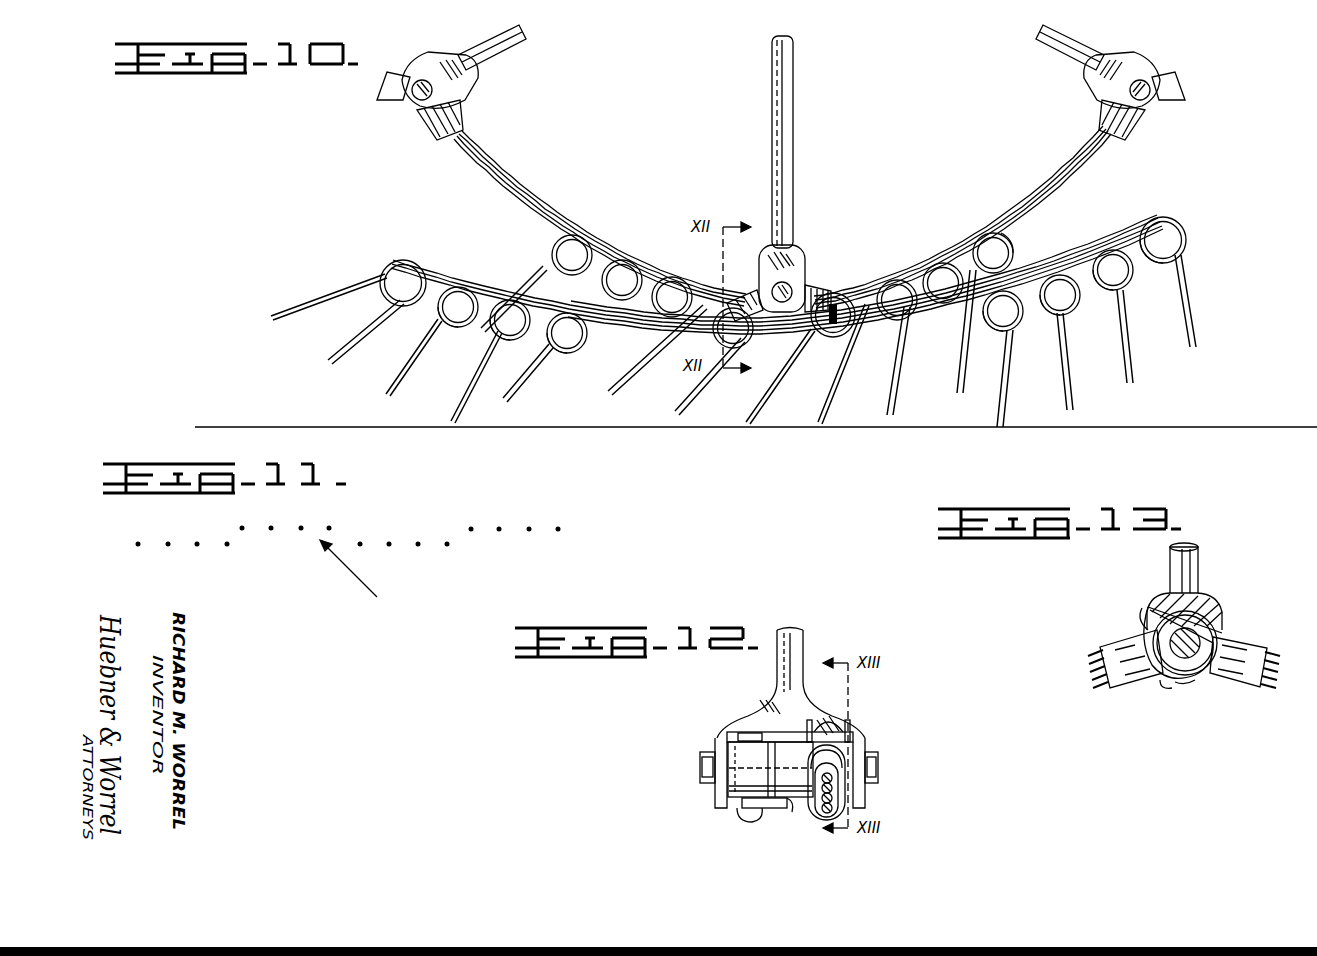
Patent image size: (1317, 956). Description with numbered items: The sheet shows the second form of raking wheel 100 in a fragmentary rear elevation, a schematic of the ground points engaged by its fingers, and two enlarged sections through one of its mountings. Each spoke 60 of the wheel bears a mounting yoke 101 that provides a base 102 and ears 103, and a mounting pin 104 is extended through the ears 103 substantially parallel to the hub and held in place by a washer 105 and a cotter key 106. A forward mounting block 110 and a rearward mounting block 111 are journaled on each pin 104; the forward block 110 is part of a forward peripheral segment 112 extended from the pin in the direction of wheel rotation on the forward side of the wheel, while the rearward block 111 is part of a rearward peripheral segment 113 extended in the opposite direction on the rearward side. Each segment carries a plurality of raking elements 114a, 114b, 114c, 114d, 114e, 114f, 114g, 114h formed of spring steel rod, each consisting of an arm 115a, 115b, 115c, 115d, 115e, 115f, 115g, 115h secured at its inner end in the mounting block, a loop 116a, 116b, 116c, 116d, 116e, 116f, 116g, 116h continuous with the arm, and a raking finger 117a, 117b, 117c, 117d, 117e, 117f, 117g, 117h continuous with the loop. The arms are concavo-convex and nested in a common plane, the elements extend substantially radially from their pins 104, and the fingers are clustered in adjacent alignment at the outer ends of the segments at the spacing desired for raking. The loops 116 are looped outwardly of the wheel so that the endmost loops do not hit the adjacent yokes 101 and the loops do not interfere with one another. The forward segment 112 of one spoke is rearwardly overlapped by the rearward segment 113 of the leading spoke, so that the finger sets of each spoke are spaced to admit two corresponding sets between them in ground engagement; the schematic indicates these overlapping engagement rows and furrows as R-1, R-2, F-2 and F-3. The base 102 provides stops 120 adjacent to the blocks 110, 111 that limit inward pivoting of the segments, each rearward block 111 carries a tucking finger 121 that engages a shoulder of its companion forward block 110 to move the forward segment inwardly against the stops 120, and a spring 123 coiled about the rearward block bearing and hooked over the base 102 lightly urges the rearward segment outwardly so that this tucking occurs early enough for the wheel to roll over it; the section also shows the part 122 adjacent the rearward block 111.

In FIG. 10, the spokes 60 is at (520, 46).
In FIG. 10, the second form of raking wheel 100 is at (508, 172).
In FIG. 10, the mounting yokes 101 is at (462, 83).
In FIG. 12, the mounting yokes 101 is at (856, 738).
In FIG. 13, the mounting yokes 101 is at (1212, 602).
In FIG. 12, the bases 102 is at (778, 710).
In FIG. 10, the ears 103 is at (786, 312).
In FIG. 12, the ears 103 is at (716, 800).
In FIG. 10, the mounting pins 104 is at (416, 100).
In FIG. 12, the mounting pins 104 is at (880, 770).
In FIG. 13, the mounting pins 104 is at (1222, 633).
In FIG. 12, the washers 105 is at (712, 745).
In FIG. 12, the cotter keys 106 is at (700, 750).
In FIG. 12, the forward mounting block 110 is at (760, 808).
In FIG. 13, the forward mounting block 110 is at (1264, 655).
In FIG. 12, the rearward mounting block 111 is at (820, 815).
In FIG. 13, the rearward mounting block 111 is at (1140, 680).
In FIG. 10, the forward peripheral segments 112 is at (620, 252).
In FIG. 10, the rearward peripheral segments 113 is at (476, 283).
In FIG. 10, the raking element 114a is at (735, 300).
In FIG. 10, the raking element 114b is at (748, 298).
In FIG. 10, the raking element 114c is at (640, 320).
In FIG. 10, the raking element 114d is at (712, 322).
In FIG. 10, the raking element 114e is at (848, 300).
In FIG. 10, the raking element 114f is at (890, 330).
In FIG. 10, the raking element 114g is at (1036, 310).
In FIG. 10, the raking element 114h is at (946, 330).
In FIG. 10, the arm 115a is at (590, 318).
In FIG. 10, the arm 115b is at (530, 300).
In FIG. 10, the arm 115c is at (530, 258).
In FIG. 10, the arm 115d is at (432, 272).
In FIG. 10, the arm 115e is at (896, 296).
In FIG. 10, the arm 115f is at (942, 282).
In FIG. 10, the arm 115g is at (1065, 262).
In FIG. 10, the arm 115h is at (1112, 262).
In FIG. 10, the loops 116 is at (1015, 252).
In FIG. 10, the loop 116a is at (552, 352).
In FIG. 10, the loop 116b is at (498, 340).
In FIG. 10, the loop 116c is at (450, 324).
In FIG. 10, the loop 116d is at (386, 270).
In FIG. 10, the loop 116e is at (1002, 331).
In FIG. 10, the loop 116f is at (1058, 358).
In FIG. 10, the loop 116g is at (1098, 288).
In FIG. 10, the loop 116h is at (1182, 260).
In FIG. 10, the raking finger 117a is at (478, 405).
In FIG. 10, the raking finger 117b is at (415, 382).
In FIG. 10, the raking finger 117c is at (352, 350).
In FIG. 10, the raking finger 117d is at (314, 308).
In FIG. 10, the raking finger 117e is at (1004, 405).
In FIG. 10, the raking finger 117f is at (1074, 403).
In FIG. 10, the raking finger 117g is at (1134, 366).
In FIG. 10, the raking finger 117h is at (1192, 312).
In FIG. 12, the stops 120 is at (740, 735).
In FIG. 13, the stops 120 is at (1150, 605).
In FIG. 12, the tucking finger 121 is at (790, 812).
In FIG. 13, the tucking finger 121 is at (1170, 690).
In FIG. 12, the plate 122 is at (737, 812).
In FIG. 13, the plate 122 is at (1225, 685).
In FIG. 13, the spring 123 is at (1145, 606).
In FIG. 11, the row 1 R-1 is at (447, 544).
In FIG. 11, the row 2 R-2 is at (227, 544).
In FIG. 11, the furrow 2 F-2 is at (558, 529).
In FIG. 11, the furrow 3 F-3 is at (329, 528).